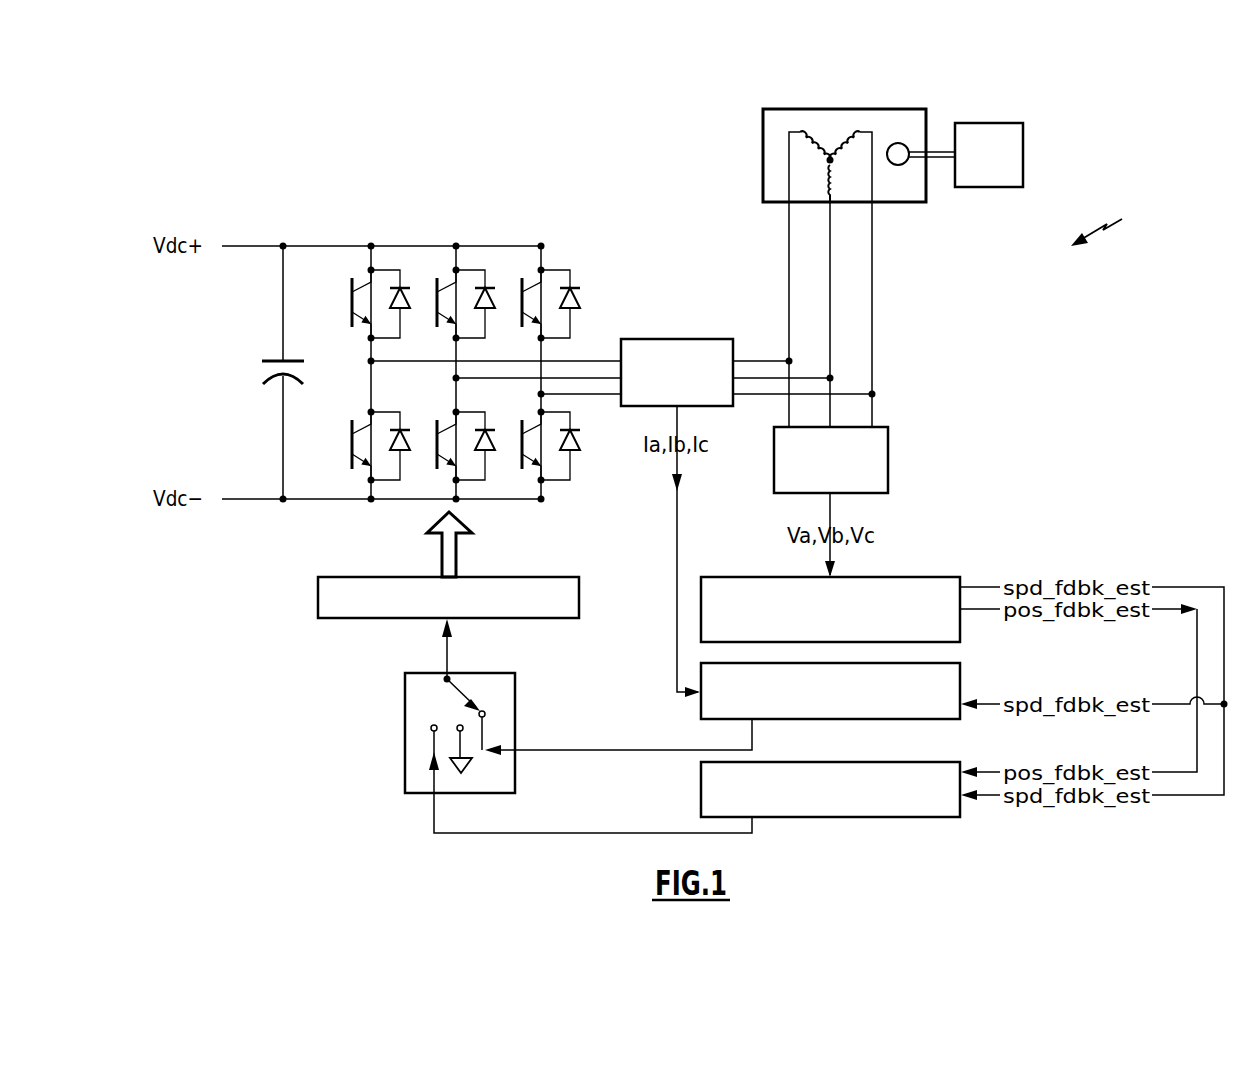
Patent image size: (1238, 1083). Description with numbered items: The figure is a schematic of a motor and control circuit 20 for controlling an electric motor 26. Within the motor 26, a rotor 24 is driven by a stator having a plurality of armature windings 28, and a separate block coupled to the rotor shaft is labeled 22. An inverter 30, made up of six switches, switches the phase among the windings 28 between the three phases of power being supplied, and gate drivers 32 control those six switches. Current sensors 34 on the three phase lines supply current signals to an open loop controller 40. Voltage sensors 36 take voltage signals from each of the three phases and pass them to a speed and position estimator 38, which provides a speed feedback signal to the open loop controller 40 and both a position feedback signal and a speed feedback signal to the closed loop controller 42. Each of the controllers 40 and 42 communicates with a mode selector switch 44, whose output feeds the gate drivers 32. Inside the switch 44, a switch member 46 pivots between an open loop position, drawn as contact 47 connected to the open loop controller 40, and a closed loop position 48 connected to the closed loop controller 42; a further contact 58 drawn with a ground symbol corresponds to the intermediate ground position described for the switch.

The motor and control circuit 20 is at (1113, 227).
The load 22 is at (1017, 141).
The rotor 24 is at (900, 165).
The electric motor 26 is at (768, 141).
The armature windings 28 is at (828, 157).
The inverter 30 is at (384, 207).
The gate drivers 32 is at (340, 577).
The current sensors 34 is at (677, 339).
The voltage sensors 36 is at (888, 452).
The speed and position estimator 38 is at (752, 577).
The open loop controller 40 is at (700, 710).
The closed loop controller 42 is at (700, 786).
The mode selector switch 44 is at (415, 698).
The switch member 46 is at (468, 690).
The switch contact 47 is at (485, 735).
The closed loop position 48 is at (430, 742).
The switch contact 58 is at (470, 755).